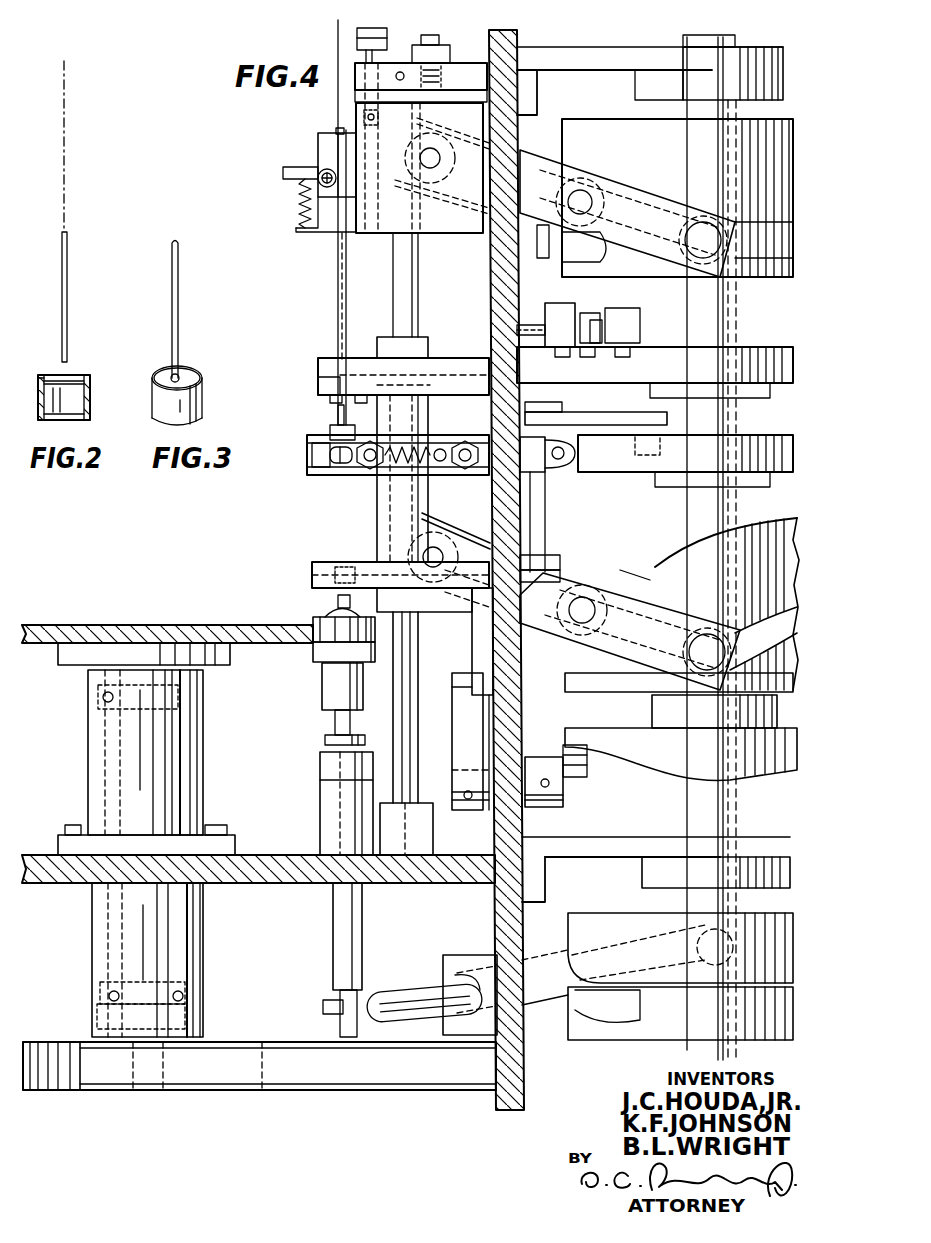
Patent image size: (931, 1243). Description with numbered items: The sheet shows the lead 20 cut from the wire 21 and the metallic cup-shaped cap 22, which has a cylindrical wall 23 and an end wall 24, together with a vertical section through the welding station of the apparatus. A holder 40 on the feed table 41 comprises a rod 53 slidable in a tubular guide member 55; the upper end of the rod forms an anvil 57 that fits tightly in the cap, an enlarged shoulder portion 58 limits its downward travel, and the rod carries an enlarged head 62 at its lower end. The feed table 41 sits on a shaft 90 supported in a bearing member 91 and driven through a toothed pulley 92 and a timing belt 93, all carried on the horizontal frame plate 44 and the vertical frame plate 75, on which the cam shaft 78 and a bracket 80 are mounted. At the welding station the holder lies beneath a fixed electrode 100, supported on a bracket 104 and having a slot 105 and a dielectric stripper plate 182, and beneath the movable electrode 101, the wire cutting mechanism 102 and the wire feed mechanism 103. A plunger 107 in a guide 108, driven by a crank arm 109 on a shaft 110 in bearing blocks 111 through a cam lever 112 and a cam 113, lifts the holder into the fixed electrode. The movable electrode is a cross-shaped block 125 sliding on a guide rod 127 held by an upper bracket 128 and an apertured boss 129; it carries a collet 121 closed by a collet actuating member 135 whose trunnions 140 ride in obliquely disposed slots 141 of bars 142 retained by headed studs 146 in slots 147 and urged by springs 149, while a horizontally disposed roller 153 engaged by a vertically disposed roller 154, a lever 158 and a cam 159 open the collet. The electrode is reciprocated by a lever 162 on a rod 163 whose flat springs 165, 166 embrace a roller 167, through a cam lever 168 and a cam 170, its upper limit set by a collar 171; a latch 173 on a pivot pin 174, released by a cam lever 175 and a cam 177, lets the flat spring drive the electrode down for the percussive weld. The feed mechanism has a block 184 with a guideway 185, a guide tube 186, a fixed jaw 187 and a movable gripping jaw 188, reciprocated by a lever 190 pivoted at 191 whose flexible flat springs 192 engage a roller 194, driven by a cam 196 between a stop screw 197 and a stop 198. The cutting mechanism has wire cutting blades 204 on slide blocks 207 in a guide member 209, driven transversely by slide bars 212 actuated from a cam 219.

In FIG. 2, the lead 20 is at (67, 280).
In FIG. 3, the lead 20 is at (179, 280).
In FIG. 2, the wire 21 is at (67, 178).
In FIG. 4, the wire 21 is at (336, 60).
In FIG. 2, the cap 22 is at (86, 375).
In FIG. 3, the cap 22 is at (160, 370).
In FIG. 2, the cylindrical wall 23 is at (92, 390).
In FIG. 3, the cylindrical wall 23 is at (204, 392).
In FIG. 2, the end wall 24 is at (44, 376).
In FIG. 3, the end wall 24 is at (186, 372).
In FIG. 4, the holder 40 is at (322, 608).
In FIG. 4, the feed table 41 is at (178, 628).
In FIG. 4, the horizontal frame plate 44 is at (252, 878).
In FIG. 4, the rod 53 is at (335, 718).
In FIG. 4, the tubular guide member 55 is at (322, 678).
In FIG. 4, the anvil 57 is at (336, 600).
In FIG. 4, the enlarged shoulder portion 58 is at (313, 626).
In FIG. 4, the enlarged head 62 is at (325, 740).
In FIG. 4, the vertical frame plate 75 is at (490, 254).
In FIG. 4, the cam shaft 78 is at (730, 300).
In FIG. 4, the bracket 80 is at (650, 84).
In FIG. 4, the shaft 90 is at (200, 753).
In FIG. 4, the bearing member 91 is at (200, 795).
In FIG. 4, the toothed pulley 92 is at (246, 1088).
In FIG. 4, the timing belt 93 is at (306, 1074).
In FIG. 4, the fixed electrode 100 is at (312, 582).
In FIG. 4, the movable electrode 101 is at (312, 493).
In FIG. 4, the wire cutting mechanism 102 is at (308, 366).
In FIG. 4, the wire feed mechanism 103 is at (310, 130).
In FIG. 4, the bracket 104 is at (445, 612).
In FIG. 4, the slot 105 is at (362, 568).
In FIG. 4, the plunger 107 is at (320, 770).
In FIG. 4, the guide 108 is at (320, 818).
In FIG. 4, the crank arm 109 is at (402, 996).
In FIG. 4, the shaft 110 is at (450, 960).
In FIG. 4, the bearing blocks 111 is at (474, 962).
In FIG. 4, the cam lever 112 is at (545, 928).
In FIG. 4, the cam 113 is at (598, 1042).
In FIG. 4, the collet 121 is at (338, 418).
In FIG. 4, the cross-shaped block 125 is at (377, 522).
In FIG. 4, the guide rod 127 is at (400, 676).
In FIG. 4, the upper bracket 128 is at (462, 66).
In FIG. 4, the apertured boss 129 is at (406, 862).
In FIG. 4, the collet actuating member 135 is at (330, 436).
In FIG. 4, the trunnions 140 is at (365, 475).
In FIG. 4, the obliquely disposed slots 141 is at (330, 455).
In FIG. 4, the bars 142 is at (314, 462).
In FIG. 4, the headed studs 146 is at (463, 440).
In FIG. 4, the slots 147 is at (430, 468).
In FIG. 4, the springs 149 is at (432, 470).
In FIG. 4, the horizontally disposed roller 153 is at (560, 470).
In FIG. 4, the vertically disposed roller 154 is at (536, 500).
In FIG. 4, the lever 158 is at (667, 428).
In FIG. 4, the cam 159 is at (640, 472).
In FIG. 4, the lever 162 is at (628, 570).
In FIG. 4, the rod 163 is at (586, 598).
In FIG. 4, the flat spring 165 is at (540, 560).
In FIG. 4, the flat spring 166 is at (550, 572).
In FIG. 4, the roller 167 is at (440, 548).
In FIG. 4, the cam lever 168 is at (662, 590).
In FIG. 4, the cam 170 is at (688, 572).
In FIG. 4, the collar 171 is at (420, 337).
In FIG. 4, the latch 173 is at (495, 704).
In FIG. 4, the pivot pin 174 is at (522, 756).
In FIG. 4, the cam lever 175 is at (560, 783).
In FIG. 4, the cam 177 is at (627, 744).
In FIG. 4, the stripper plate 182 is at (335, 572).
In FIG. 4, the block 184 is at (328, 232).
In FIG. 4, the guideway 185 is at (334, 130).
In FIG. 4, the guide tube 186 is at (336, 276).
In FIG. 4, the fixed jaw 187 is at (318, 152).
In FIG. 4, the movable gripping jaw 188 is at (283, 172).
In FIG. 4, the lever 190 is at (640, 180).
In FIG. 4, the pivot 191 is at (588, 192).
In FIG. 4, the flexible flat springs 192 is at (540, 176).
In FIG. 4, the roller 194 is at (419, 168).
In FIG. 4, the cam 196 is at (606, 126).
In FIG. 4, the stop screw 197 is at (439, 142).
In FIG. 4, the stop 198 is at (362, 32).
In FIG. 4, the wire cutting blades 204 is at (333, 400).
In FIG. 4, the slide blocks 207 is at (318, 383).
In FIG. 4, the guide member 209 is at (447, 375).
In FIG. 4, the slide bars 212 is at (545, 370).
In FIG. 4, the cam 219 is at (764, 352).